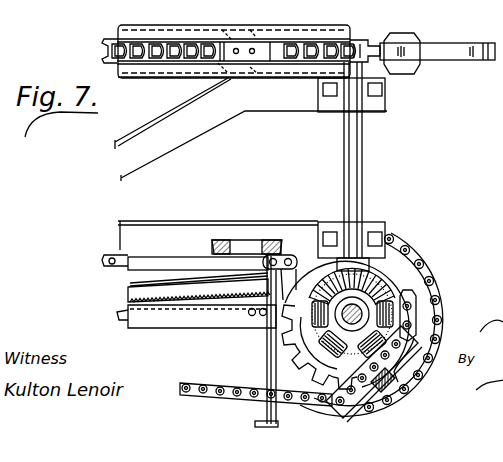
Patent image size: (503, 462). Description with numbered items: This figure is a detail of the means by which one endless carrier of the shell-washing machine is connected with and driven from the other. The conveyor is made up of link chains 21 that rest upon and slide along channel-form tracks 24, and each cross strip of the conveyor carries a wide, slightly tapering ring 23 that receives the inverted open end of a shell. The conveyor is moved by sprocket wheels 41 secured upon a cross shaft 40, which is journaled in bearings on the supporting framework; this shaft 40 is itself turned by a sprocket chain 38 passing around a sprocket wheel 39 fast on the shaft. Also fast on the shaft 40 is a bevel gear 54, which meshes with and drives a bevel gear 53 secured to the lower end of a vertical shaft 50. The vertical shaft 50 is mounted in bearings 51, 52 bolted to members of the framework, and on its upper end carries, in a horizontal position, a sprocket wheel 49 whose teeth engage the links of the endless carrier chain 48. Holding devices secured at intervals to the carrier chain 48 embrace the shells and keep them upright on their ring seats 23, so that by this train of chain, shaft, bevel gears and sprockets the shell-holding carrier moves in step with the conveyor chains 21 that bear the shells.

The endless carrier chain 48 is at (103, 51).
The sprocket wheel 49 is at (358, 40).
The vertical shaft 50 is at (363, 147).
The bearing 51 is at (384, 97).
The bearing 52 is at (355, 240).
The bevel gear 53 is at (380, 290).
The bevel gear 54 is at (380, 306).
The shaft 40 is at (405, 296).
The sprocket wheel 41 is at (293, 313).
The ring 23 is at (232, 246).
The link chain 21 is at (338, 402).
The track 24 is at (130, 270).
The sprocket chain 38 is at (206, 383).
The sprocket wheel 39 is at (283, 373).